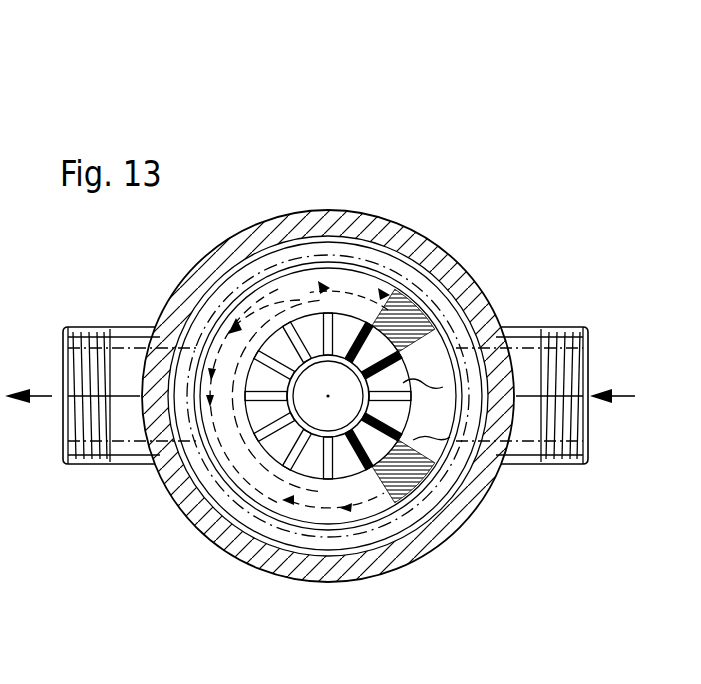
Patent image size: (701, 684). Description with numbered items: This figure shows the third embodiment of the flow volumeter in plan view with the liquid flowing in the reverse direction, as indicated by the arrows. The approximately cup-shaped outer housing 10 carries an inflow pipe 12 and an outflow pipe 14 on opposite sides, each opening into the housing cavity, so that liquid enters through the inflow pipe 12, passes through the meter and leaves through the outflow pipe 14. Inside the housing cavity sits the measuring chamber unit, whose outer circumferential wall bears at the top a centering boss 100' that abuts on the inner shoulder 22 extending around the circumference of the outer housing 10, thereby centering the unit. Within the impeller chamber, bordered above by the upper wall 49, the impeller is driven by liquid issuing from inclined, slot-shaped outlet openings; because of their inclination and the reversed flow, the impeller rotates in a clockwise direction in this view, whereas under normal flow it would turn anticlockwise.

The outer housing 10 is at (488, 515).
The inflow pipe 12 is at (520, 330).
The outflow pipe 14 is at (122, 330).
The inner shoulder 22 is at (278, 537).
The upper wall 49 is at (400, 410).
The centering boss 100' is at (328, 434).